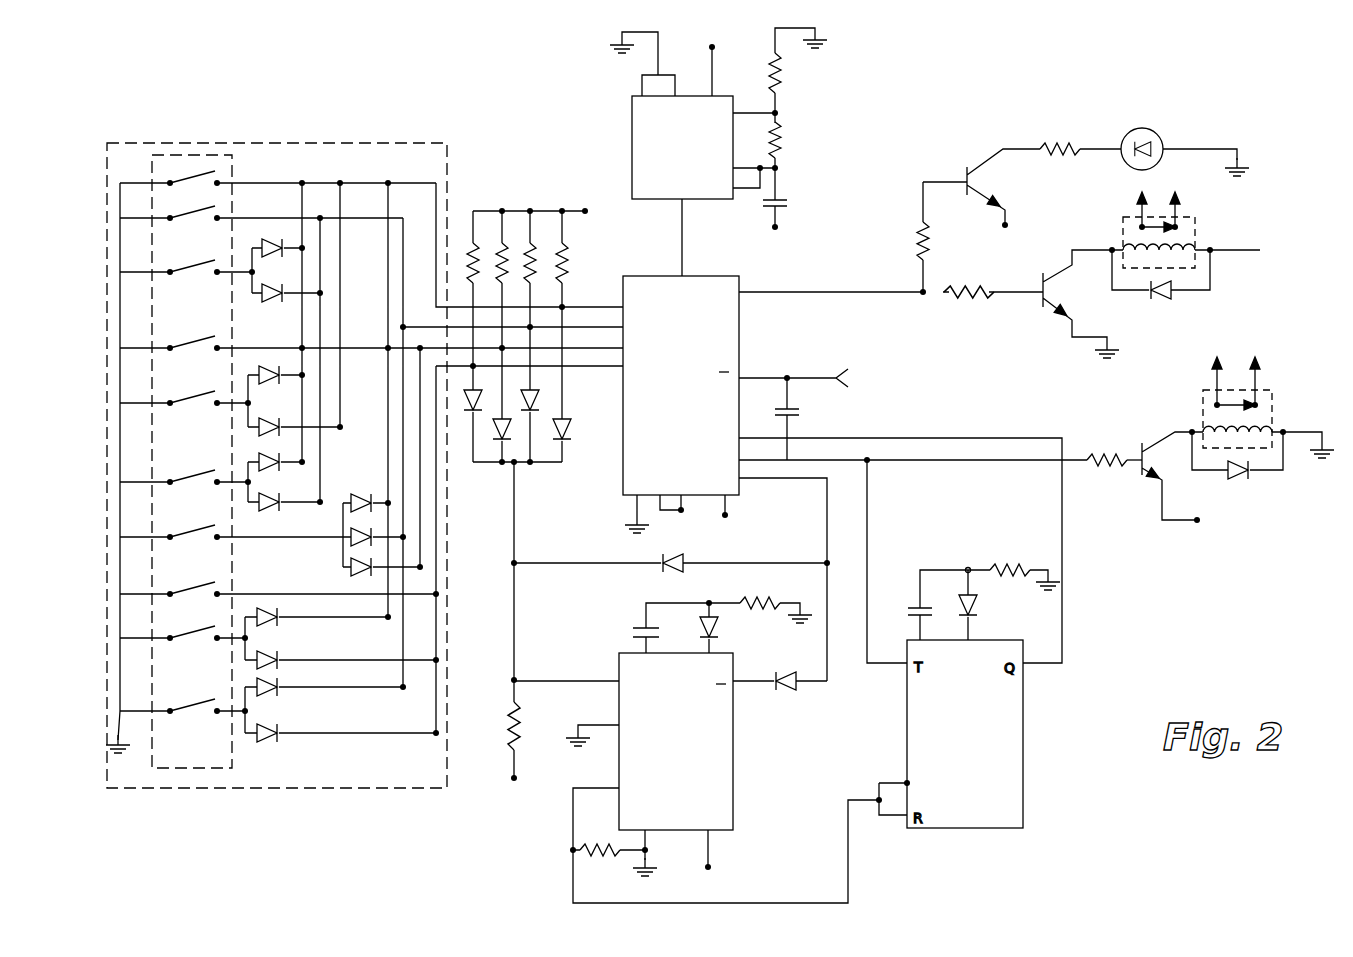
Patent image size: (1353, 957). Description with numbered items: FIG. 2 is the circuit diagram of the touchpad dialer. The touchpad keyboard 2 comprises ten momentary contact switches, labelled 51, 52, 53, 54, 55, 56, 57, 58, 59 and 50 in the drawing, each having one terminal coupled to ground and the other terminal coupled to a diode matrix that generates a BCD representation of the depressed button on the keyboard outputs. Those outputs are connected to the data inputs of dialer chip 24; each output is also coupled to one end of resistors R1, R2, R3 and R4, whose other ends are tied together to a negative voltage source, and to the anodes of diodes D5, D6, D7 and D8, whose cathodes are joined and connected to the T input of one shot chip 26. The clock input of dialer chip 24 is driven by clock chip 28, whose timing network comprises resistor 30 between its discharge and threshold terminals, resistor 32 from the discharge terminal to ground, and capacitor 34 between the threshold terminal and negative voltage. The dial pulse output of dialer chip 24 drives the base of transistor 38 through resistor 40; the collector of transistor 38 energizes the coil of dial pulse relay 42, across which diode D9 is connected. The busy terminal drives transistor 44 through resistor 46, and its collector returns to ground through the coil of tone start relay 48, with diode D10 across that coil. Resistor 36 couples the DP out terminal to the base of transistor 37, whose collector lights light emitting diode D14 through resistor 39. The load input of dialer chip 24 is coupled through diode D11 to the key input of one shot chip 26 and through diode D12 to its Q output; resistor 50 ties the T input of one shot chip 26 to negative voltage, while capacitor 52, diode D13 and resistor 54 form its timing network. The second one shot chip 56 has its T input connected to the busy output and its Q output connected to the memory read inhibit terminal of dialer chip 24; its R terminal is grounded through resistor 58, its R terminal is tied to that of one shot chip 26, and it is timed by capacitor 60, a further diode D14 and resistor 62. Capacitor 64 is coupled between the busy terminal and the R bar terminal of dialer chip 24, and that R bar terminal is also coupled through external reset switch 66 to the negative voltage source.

The touchpad keyboard 2 is at (395, 143).
The momentary contact switch 51 is at (192, 177).
The capacitor 52 is at (192, 212).
The momentary contact switch 53 is at (192, 268).
The resistor 54 is at (190, 343).
The momentary contact switch 55 is at (192, 398).
The one shot chip 56 is at (190, 475).
The momentary contact switch 57 is at (190, 531).
The resistor 58 is at (190, 588).
The momentary contact switch 59 is at (192, 633).
The resistor 50 is at (190, 706).
The resistor R1 is at (470, 242).
The resistor R2 is at (500, 241).
The resistor R3 is at (528, 238).
The resistor R4 is at (562, 241).
The diode D5 is at (462, 440).
The diode D6 is at (492, 463).
The diode D7 is at (542, 440).
The diode D8 is at (564, 442).
The clock chip 28 is at (632, 137).
The dialer chip 24 is at (634, 276).
The resistor 32 is at (784, 70).
The resistor 30 is at (782, 129).
The capacitor 34 is at (788, 200).
The external reset switch 66 is at (769, 575).
The capacitor 64 is at (796, 415).
The diode D11 is at (660, 570).
The one shot chip 26 is at (733, 774).
The diode D13 is at (720, 626).
The diode D12 is at (784, 690).
The capacitor 60 is at (916, 612).
The resistor 62 is at (1014, 568).
The transistor 37 is at (964, 168).
The resistor 36 is at (918, 254).
The resistor 39 is at (1056, 144).
The light emitting diode D14 is at (1156, 130).
The resistor 40 is at (960, 294).
The transistor 38 is at (1034, 312).
The dial pulse relay 42 is at (1198, 244).
The diode D9 is at (1164, 300).
The resistor 46 is at (1110, 460).
The transistor 44 is at (1138, 464).
The tone start relay 48 is at (1272, 408).
The diode D10 is at (1249, 472).